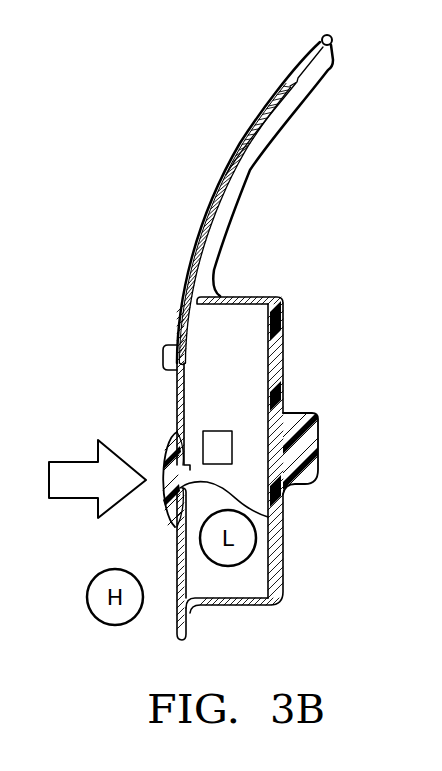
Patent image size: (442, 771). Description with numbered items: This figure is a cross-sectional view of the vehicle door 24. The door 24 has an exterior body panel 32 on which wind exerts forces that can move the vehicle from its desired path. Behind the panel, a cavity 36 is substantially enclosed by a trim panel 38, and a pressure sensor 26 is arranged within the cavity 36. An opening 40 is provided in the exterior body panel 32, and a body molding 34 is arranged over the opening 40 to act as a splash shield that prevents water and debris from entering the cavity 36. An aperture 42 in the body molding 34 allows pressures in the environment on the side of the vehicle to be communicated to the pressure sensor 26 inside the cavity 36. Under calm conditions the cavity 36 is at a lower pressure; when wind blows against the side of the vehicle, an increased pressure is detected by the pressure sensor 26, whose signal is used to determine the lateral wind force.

The door 24 is at (195, 148).
The pressure sensor 26 is at (218, 433).
The exterior body panel 32 is at (182, 320).
The body molding 34 is at (170, 430).
The cavity 36 is at (243, 367).
The trim panel 38 is at (283, 338).
The opening 40 is at (283, 517).
The aperture 42 is at (173, 527).